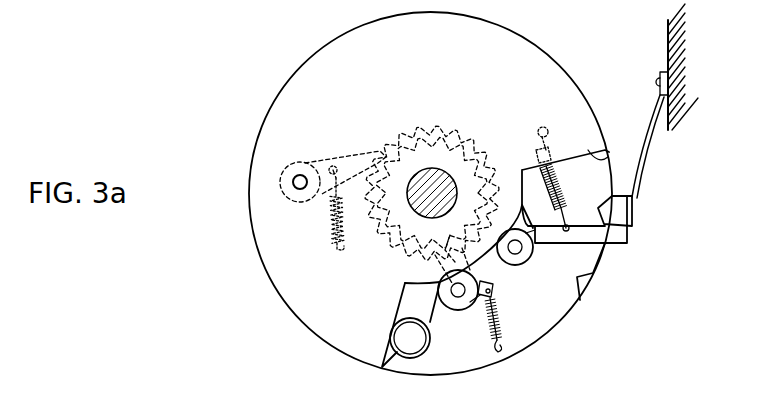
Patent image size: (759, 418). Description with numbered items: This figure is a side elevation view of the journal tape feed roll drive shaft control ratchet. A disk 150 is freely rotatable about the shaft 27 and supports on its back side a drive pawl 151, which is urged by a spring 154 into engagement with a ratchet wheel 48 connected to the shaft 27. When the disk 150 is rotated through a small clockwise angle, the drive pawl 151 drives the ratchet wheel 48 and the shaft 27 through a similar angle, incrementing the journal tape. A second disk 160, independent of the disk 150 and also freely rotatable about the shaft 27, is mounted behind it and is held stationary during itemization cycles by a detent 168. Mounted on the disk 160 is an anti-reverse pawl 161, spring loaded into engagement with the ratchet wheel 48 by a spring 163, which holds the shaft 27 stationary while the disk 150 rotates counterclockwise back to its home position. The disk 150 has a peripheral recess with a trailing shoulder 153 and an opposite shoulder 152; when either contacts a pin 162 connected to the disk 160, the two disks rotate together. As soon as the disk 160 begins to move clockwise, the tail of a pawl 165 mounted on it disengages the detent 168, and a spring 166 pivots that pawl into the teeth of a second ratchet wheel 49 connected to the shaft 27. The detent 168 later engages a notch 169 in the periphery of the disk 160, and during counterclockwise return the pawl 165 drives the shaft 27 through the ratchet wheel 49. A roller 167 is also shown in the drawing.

The disk 150 is at (548, 58).
The drive pawl 151 is at (333, 165).
The shaft 27 is at (432, 168).
The second ratchet wheel 49 is at (398, 134).
The ratchet wheel 48 is at (453, 135).
The spring 166 is at (560, 162).
The trailing shoulder 153 is at (613, 153).
The detent 168 is at (637, 205).
The pawl 165 is at (586, 222).
The spring 154 is at (330, 229).
The roller 167 is at (539, 247).
The notch 169 is at (592, 280).
The second disk 160 is at (580, 303).
The shoulder 152 is at (403, 287).
The anti-reverse pawl 161 is at (440, 296).
The pin 162 is at (382, 368).
The spring 163 is at (512, 348).